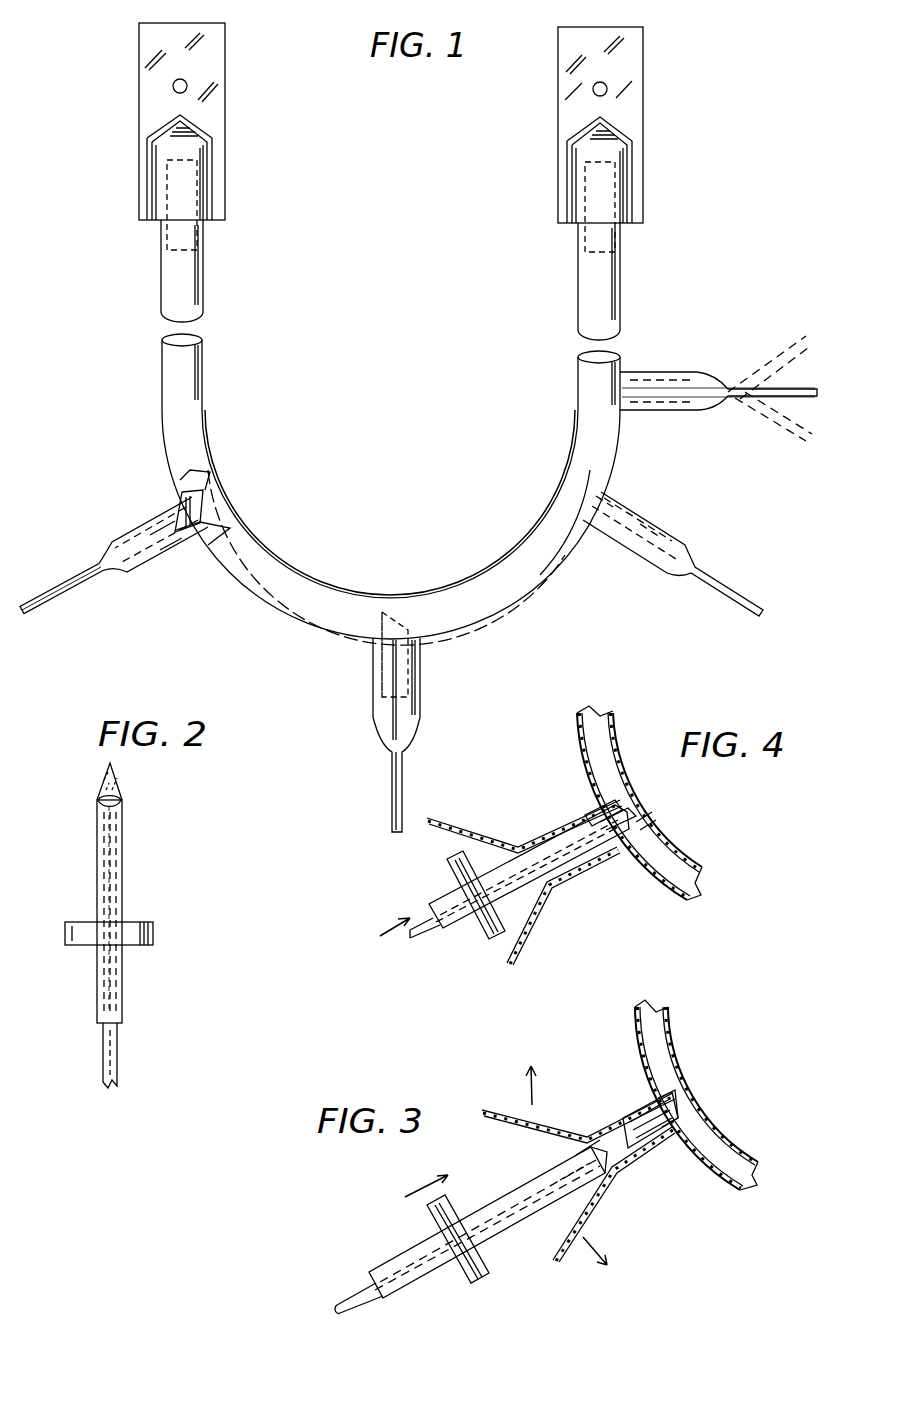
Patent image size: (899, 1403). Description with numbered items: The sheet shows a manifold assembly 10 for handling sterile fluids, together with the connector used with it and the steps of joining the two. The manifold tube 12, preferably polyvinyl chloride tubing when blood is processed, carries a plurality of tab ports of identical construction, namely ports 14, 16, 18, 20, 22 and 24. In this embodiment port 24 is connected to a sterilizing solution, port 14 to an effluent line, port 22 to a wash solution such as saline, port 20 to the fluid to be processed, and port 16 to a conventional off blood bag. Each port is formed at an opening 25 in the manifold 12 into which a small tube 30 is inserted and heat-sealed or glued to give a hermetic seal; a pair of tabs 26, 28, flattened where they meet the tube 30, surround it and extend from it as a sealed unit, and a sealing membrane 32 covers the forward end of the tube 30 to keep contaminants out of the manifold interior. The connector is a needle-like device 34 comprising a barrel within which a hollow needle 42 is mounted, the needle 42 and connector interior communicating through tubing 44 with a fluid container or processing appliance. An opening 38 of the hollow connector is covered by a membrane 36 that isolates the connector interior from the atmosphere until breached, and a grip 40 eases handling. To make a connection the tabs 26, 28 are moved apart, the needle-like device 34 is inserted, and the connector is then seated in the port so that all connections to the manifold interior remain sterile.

In FIG. 1, the manifold assembly 10 is at (350, 546).
In FIG. 1, the manifold tube 12 is at (447, 594).
In FIG. 4, the manifold tube 12 is at (626, 756).
In FIG. 3, the manifold tube 12 is at (690, 1031).
In FIG. 1, the port 14 is at (212, 160).
In FIG. 1, the port 16 is at (100, 582).
In FIG. 1, the port 18 is at (406, 762).
In FIG. 1, the port 20 is at (702, 586).
In FIG. 1, the port 22 is at (711, 411).
In FIG. 1, the port 24 is at (632, 208).
In FIG. 4, the opening 25 is at (641, 826).
In FIG. 1, the tab 26 is at (752, 372).
In FIG. 4, the tab 26 is at (464, 826).
In FIG. 3, the tab 26 is at (490, 1108).
In FIG. 1, the tab 28 is at (768, 450).
In FIG. 4, the tab 28 is at (526, 936).
In FIG. 3, the tab 28 is at (562, 1265).
In FIG. 1, the tube 30 is at (161, 516).
In FIG. 4, the tube 30 is at (592, 813).
In FIG. 3, the tube 30 is at (641, 1106).
In FIG. 1, the sealing membrane 32 is at (178, 532).
In FIG. 3, the sealing membrane 32 is at (690, 1110).
In FIG. 2, the needle-like device 34 is at (123, 878).
In FIG. 4, the needle-like device 34 is at (570, 876).
In FIG. 3, the needle-like device 34 is at (509, 1190).
In FIG. 2, the membrane 36 is at (106, 772).
In FIG. 3, the membrane 36 is at (603, 1142).
In FIG. 2, the opening 38 is at (118, 799).
In FIG. 2, the grip 40 is at (148, 925).
In FIG. 4, the grip 40 is at (448, 868).
In FIG. 3, the grip 40 is at (455, 1205).
In FIG. 2, the hollow needle 42 is at (118, 832).
In FIG. 4, the hollow needle 42 is at (623, 806).
In FIG. 3, the hollow needle 42 is at (543, 1218).
In FIG. 2, the tubing 44 is at (118, 1066).